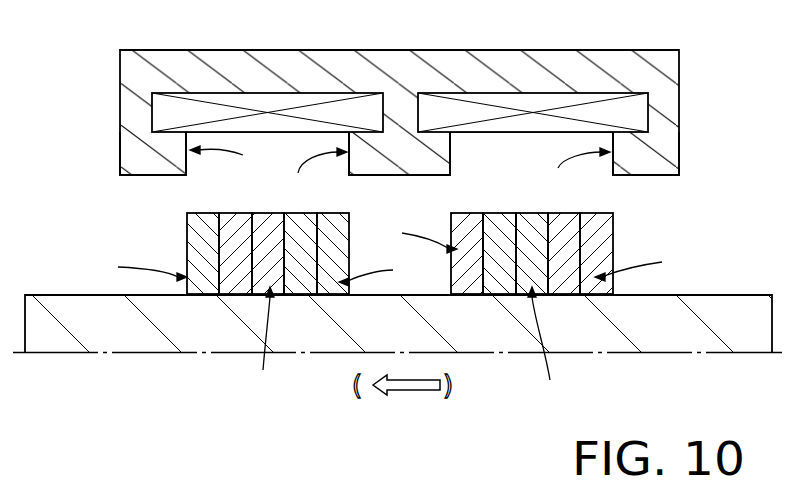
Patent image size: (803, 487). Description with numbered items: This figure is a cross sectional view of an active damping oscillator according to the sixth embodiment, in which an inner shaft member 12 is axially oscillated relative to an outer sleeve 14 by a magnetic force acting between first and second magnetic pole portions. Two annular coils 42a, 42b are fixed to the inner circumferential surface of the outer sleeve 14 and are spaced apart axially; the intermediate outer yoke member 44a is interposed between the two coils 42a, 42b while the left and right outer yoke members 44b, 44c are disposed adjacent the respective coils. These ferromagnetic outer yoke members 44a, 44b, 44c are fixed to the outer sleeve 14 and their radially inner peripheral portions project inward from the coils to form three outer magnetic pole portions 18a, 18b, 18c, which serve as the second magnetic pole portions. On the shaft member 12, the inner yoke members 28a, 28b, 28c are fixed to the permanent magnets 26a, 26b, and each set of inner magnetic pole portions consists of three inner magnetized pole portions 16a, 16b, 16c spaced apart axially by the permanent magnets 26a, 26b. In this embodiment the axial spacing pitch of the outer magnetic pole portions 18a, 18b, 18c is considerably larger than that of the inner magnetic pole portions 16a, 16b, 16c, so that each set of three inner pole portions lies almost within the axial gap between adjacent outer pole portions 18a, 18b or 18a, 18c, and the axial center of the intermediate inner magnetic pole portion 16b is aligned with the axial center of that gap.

The shaft member 12 is at (78, 312).
The outer sleeve 14 is at (230, 70).
The inner magnetic pole portion 16a is at (189, 211).
The intermediate inner magnetic pole portion 16b is at (258, 211).
The inner magnetic pole portion 16c is at (345, 212).
The intermediate outer magnetic pole portion 18a is at (444, 176).
The outer magnetic pole portion 18b is at (129, 176).
The outer magnetic pole portion 18c is at (673, 177).
The permanent magnet 26a is at (235, 287).
The permanent magnet 26b is at (301, 287).
The inner yoke member 28a is at (271, 247).
The inner yoke member 28b is at (413, 346).
The magnetization direction arrow 28c is at (517, 267).
The coil 42a is at (263, 100).
The coil 42b is at (533, 100).
The intermediate outer yoke member 44a is at (312, 173).
The outer yoke member 44b is at (235, 160).
The outer yoke member 44c is at (578, 171).